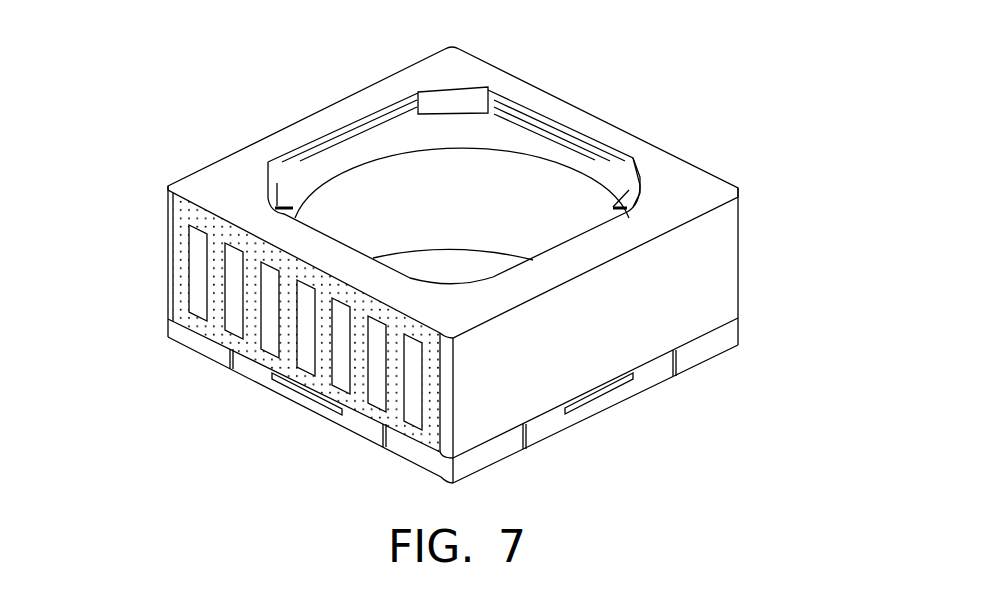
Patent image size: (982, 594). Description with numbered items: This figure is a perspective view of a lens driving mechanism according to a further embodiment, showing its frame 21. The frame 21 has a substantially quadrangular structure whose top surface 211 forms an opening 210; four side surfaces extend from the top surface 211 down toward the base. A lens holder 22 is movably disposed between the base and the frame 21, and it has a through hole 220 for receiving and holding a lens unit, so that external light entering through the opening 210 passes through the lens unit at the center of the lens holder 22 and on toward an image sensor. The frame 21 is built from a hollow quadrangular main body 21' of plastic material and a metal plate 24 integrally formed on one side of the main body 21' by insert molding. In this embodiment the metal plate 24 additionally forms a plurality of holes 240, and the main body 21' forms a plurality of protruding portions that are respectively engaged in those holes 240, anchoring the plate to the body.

The frame 21 is at (475, 300).
The main body 21' is at (644, 327).
The top surface 211 is at (222, 180).
The opening 210 is at (540, 108).
The through hole 220 is at (477, 268).
The lens holder 22 is at (357, 192).
The metal plate 24 is at (178, 247).
The holes 240 is at (233, 300).